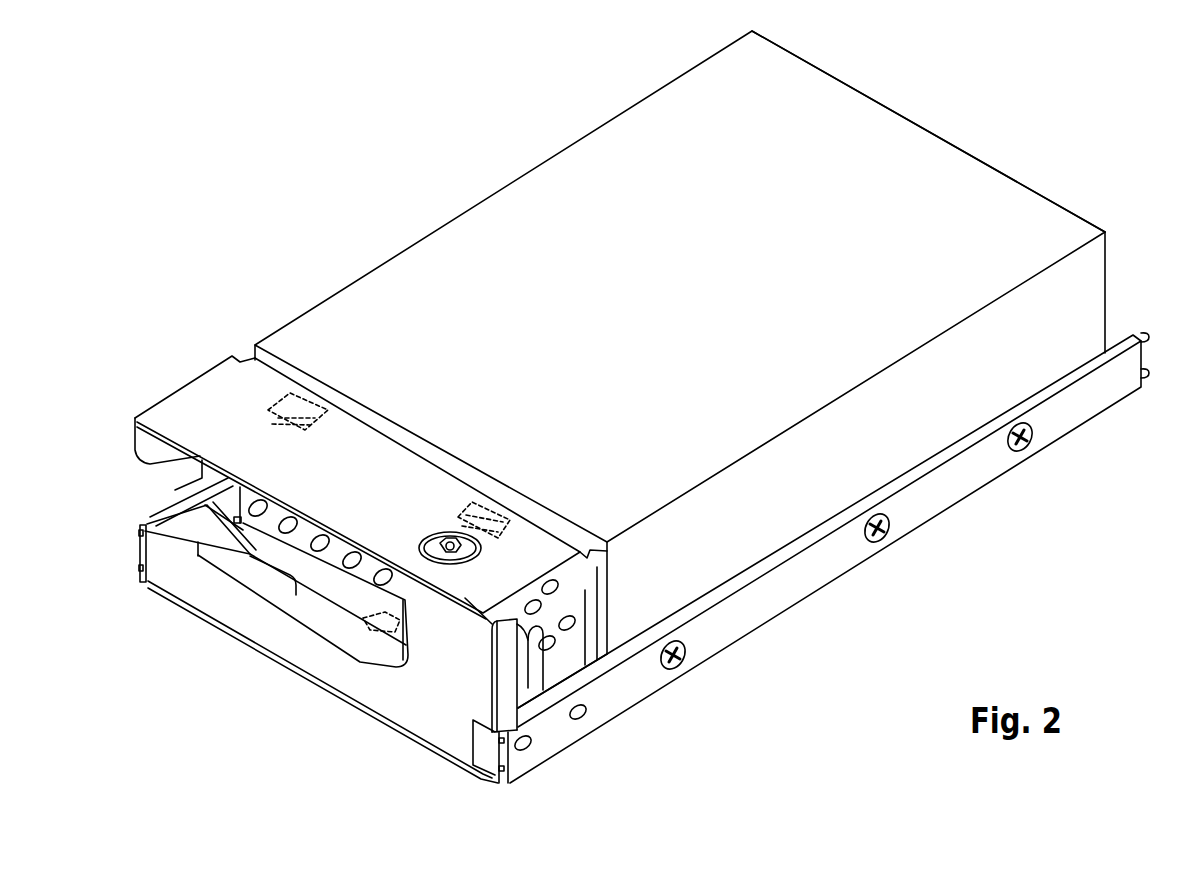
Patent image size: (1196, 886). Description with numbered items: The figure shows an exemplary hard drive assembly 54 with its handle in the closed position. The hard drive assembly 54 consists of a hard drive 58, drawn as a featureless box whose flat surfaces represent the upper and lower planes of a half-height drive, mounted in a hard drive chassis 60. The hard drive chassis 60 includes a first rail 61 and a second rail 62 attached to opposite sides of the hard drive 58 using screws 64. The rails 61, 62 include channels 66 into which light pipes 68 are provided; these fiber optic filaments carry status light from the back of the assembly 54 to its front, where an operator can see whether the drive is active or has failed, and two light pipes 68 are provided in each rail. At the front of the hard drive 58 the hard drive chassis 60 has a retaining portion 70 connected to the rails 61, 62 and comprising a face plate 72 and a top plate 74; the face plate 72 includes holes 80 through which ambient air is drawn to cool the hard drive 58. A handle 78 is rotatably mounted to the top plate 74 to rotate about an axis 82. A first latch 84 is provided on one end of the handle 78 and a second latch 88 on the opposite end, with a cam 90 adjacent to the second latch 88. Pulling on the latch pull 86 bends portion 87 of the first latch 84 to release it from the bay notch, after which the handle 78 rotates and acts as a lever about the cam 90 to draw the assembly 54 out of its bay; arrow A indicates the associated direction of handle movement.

The hard drive assembly 54 is at (430, 116).
The hard drive 58 is at (678, 284).
The hard drive chassis 60 is at (628, 803).
The first rail 61 is at (141, 526).
The second rail 62 is at (783, 598).
The screws 64 is at (678, 666).
The channels 66 is at (139, 532).
The light pipes 68 is at (1148, 338).
The retaining portion 70 is at (98, 341).
The face plate 72 is at (570, 600).
The top plate 74 is at (377, 453).
The handle 78 is at (302, 650).
The holes 80 is at (259, 504).
The axis 82 is at (449, 542).
The first latch 84 is at (193, 465).
The latch pull 86 is at (238, 556).
The portion of latch 87 is at (188, 520).
The second latch 88 is at (545, 667).
The cam 90 is at (498, 693).
The handle rotation direction A is at (378, 682).